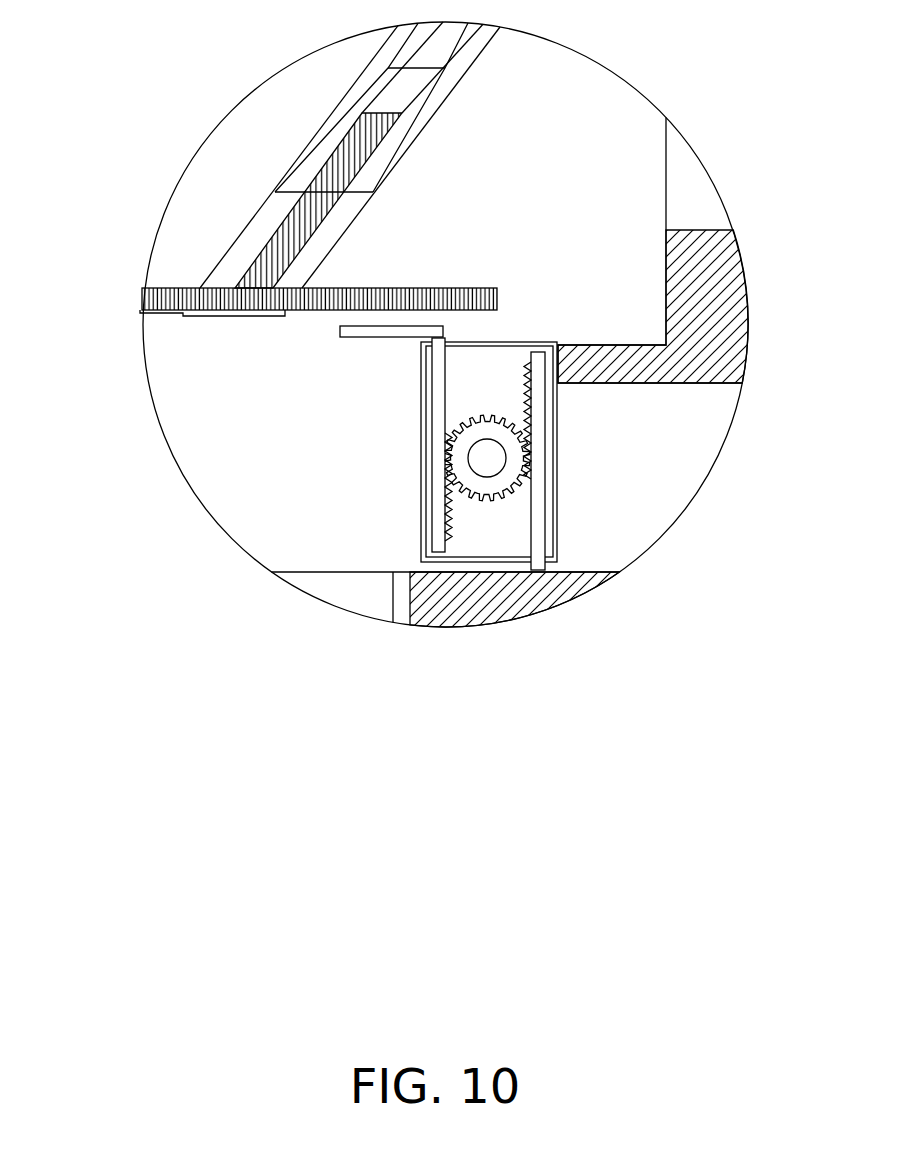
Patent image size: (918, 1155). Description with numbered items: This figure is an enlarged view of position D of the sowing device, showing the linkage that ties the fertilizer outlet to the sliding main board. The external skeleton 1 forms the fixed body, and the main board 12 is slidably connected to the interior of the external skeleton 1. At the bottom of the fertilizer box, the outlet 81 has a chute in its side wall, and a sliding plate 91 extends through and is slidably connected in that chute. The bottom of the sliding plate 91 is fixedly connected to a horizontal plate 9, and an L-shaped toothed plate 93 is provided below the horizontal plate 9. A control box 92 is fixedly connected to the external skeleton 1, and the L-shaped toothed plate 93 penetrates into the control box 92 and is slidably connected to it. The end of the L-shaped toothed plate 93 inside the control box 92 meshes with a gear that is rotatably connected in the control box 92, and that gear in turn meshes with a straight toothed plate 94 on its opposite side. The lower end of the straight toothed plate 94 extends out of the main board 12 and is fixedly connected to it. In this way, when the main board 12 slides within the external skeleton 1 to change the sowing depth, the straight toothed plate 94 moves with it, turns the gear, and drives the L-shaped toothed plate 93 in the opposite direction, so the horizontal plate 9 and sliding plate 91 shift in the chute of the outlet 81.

The position D is at (656, 100).
The external skeleton 1 is at (718, 343).
The horizontal plate 9 is at (326, 313).
The main board 12 is at (457, 617).
The outlet 81 is at (148, 318).
The sliding plate 91 is at (334, 184).
The control box 92 is at (560, 472).
The L-shaped toothed plate 93 is at (446, 494).
The straight toothed plate 94 is at (538, 519).